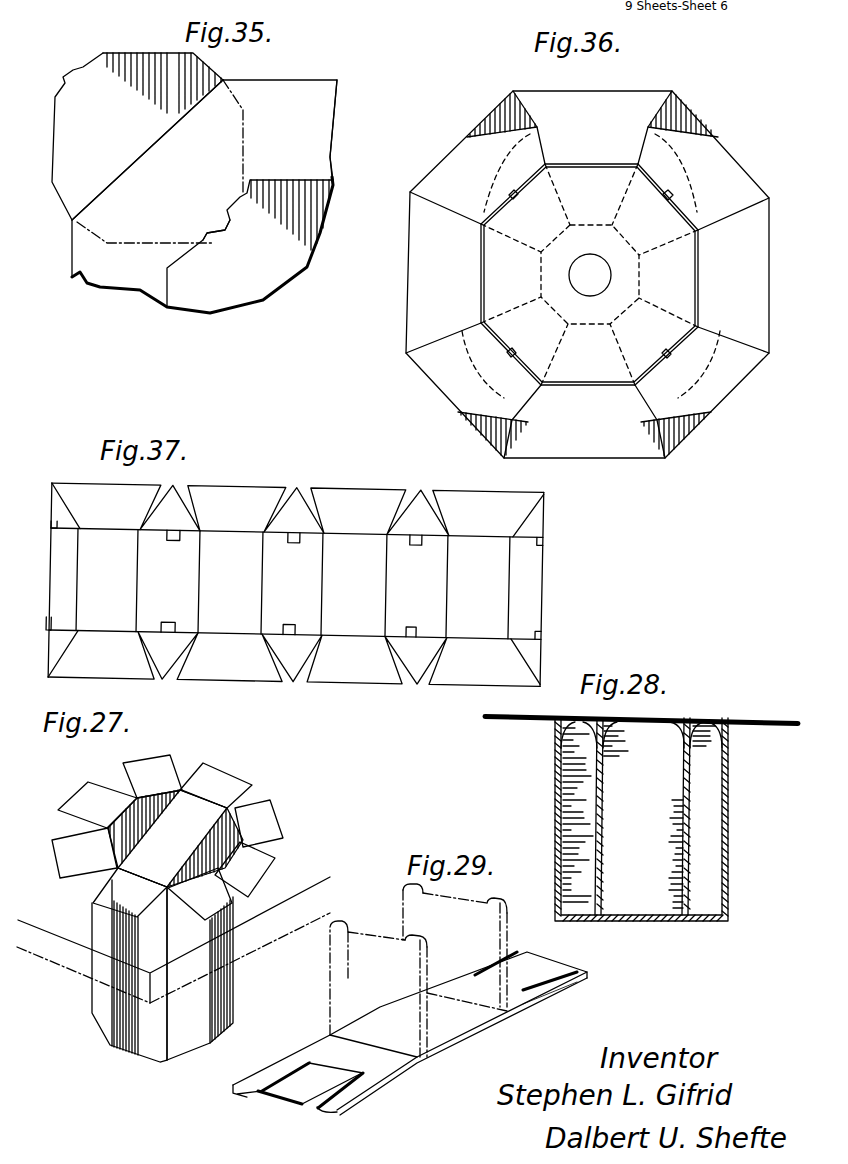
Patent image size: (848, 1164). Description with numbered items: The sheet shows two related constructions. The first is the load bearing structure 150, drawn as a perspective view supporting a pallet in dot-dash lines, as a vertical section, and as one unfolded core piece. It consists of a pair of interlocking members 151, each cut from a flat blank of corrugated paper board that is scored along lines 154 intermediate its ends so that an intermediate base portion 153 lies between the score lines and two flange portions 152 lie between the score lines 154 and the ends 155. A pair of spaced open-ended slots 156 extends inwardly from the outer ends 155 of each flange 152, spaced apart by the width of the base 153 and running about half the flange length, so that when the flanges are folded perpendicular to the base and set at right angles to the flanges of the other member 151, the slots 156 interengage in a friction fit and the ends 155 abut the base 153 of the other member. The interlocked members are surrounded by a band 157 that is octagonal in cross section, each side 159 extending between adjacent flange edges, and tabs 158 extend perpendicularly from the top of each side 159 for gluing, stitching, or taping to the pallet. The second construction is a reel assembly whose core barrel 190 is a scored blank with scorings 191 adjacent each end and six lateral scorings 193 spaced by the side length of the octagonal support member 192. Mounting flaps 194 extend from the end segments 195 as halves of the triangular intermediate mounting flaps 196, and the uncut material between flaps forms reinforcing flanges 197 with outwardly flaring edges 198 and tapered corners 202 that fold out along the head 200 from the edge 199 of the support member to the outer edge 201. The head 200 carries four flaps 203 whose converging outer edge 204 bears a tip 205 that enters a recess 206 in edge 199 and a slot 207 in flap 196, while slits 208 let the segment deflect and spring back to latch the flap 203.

In FIG. 27, the load bearing structure 150 is at (180, 915).
In FIG. 28, the load bearing structure 150 is at (641, 809).
In FIG. 27, the interlocking member 151 is at (172, 787).
In FIG. 29, the interlocking member 151 is at (420, 1060).
In FIG. 27, the flange portion 152 is at (233, 790).
In FIG. 28, the flange portion 152 is at (705, 828).
In FIG. 29, the flange portion 152 is at (410, 1036).
In FIG. 27, the intermediate base portion 153 is at (208, 802).
In FIG. 28, the intermediate base portion 153 is at (668, 722).
In FIG. 29, the intermediate base portion 153 is at (460, 1023).
In FIG. 29, the score line 154 is at (360, 1047).
In FIG. 27, the end 155 is at (228, 842).
In FIG. 28, the end 155 is at (578, 727).
In FIG. 29, the end 155 is at (550, 963).
In FIG. 29, the open-ended slot 156 is at (282, 1070).
In FIG. 27, the band 157 is at (183, 1037).
In FIG. 28, the band 157 is at (730, 897).
In FIG. 27, the tab 158 is at (278, 828).
In FIG. 27, the side 159 is at (230, 997).
In FIG. 36, the core barrel 190 is at (556, 168).
In FIG. 37, the core barrel 190 is at (262, 481).
In FIG. 37, the scoring 191 is at (80, 590).
In FIG. 35, the support member 192 is at (292, 192).
In FIG. 36, the support member 192 is at (683, 290).
In FIG. 37, the lateral scoring 193 is at (143, 573).
In FIG. 36, the mounting flap 194 is at (551, 197).
In FIG. 37, the mounting flap 194 is at (72, 480).
In FIG. 37, the end segment 195 is at (53, 577).
In FIG. 36, the intermediate mounting flap 196 is at (627, 204).
In FIG. 37, the intermediate mounting flap 196 is at (197, 482).
In FIG. 36, the reinforcing flange 197 is at (590, 100).
In FIG. 37, the reinforcing flange 197 is at (97, 497).
In FIG. 36, the outwardly flaring edge 198 is at (535, 143).
In FIG. 37, the outwardly flaring edge 198 is at (112, 500).
In FIG. 35, the edge 199 is at (253, 187).
In FIG. 36, the edge 199 is at (695, 267).
In FIG. 35, the head 200 is at (313, 102).
In FIG. 36, the head 200 is at (520, 96).
In FIG. 35, the outer edge 201 is at (263, 82).
In FIG. 36, the outer edge 201 is at (766, 248).
In FIG. 36, the tapered corner 202 is at (769, 200).
In FIG. 37, the tapered corner 202 is at (310, 488).
In FIG. 35, the flap 203 is at (140, 62).
In FIG. 36, the flap 203 is at (485, 144).
In FIG. 35, the outer edge 204 is at (93, 50).
In FIG. 35, the tip 205 is at (67, 76).
In FIG. 36, the tip 205 is at (594, 267).
In FIG. 35, the recess 206 is at (197, 233).
In FIG. 36, the recess 206 is at (510, 180).
In FIG. 36, the slot 207 is at (520, 193).
In FIG. 37, the slot 207 is at (420, 535).
In FIG. 37, the slit 208 is at (310, 540).